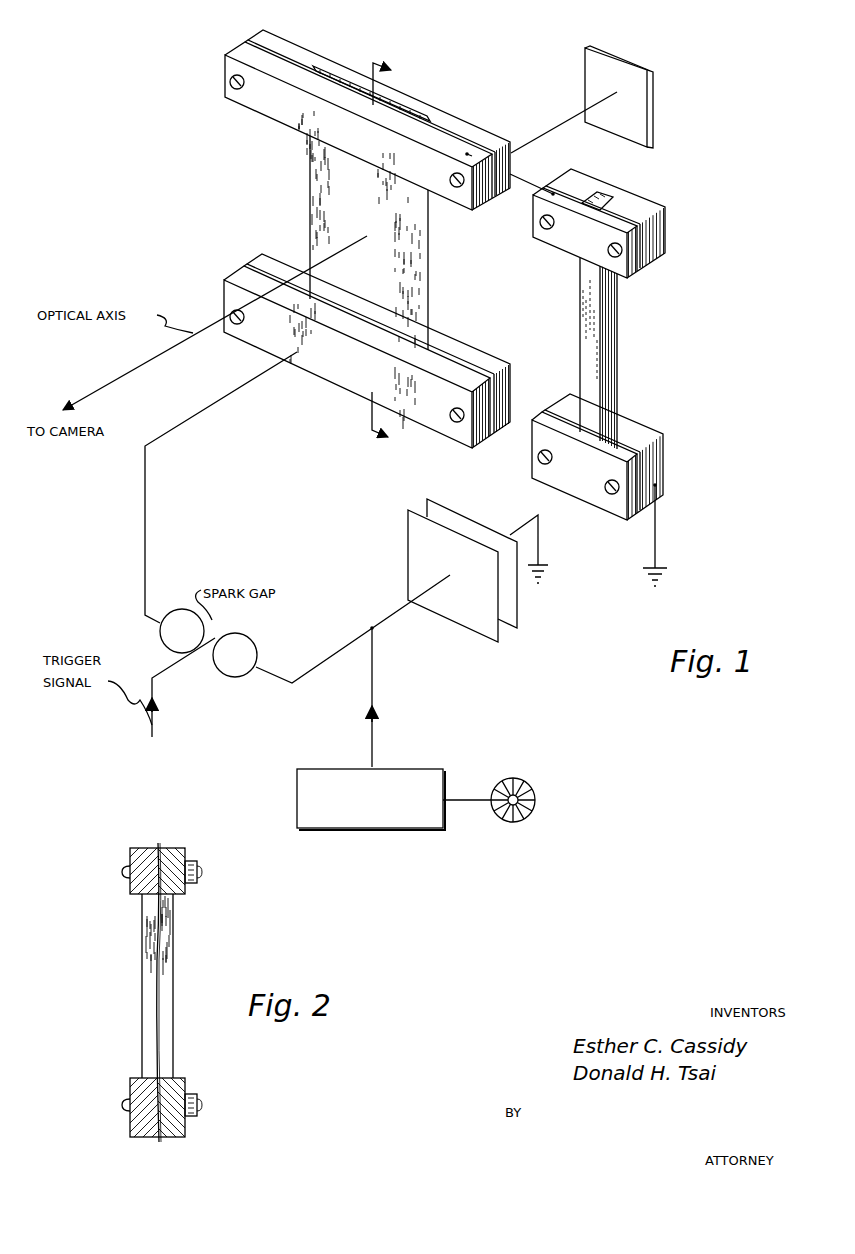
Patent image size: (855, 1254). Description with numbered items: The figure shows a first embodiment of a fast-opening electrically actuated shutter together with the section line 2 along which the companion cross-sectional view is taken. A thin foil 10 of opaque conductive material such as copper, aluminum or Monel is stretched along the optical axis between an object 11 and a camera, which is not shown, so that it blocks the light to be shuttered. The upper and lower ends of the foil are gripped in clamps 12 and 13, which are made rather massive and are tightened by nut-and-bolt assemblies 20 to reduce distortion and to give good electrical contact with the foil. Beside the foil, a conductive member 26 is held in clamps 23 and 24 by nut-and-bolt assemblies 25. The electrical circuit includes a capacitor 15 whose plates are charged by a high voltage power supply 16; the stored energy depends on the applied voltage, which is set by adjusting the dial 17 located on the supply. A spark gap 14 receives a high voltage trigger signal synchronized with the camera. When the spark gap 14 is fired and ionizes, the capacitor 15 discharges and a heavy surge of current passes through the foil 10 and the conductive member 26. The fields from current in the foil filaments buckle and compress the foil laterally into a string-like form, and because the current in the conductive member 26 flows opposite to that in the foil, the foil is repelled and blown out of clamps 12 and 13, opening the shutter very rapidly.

In FIG. 1, the section line 2— 2 is at (389, 257).
In FIG. 1, the foil 10 is at (316, 189).
In FIG. 2, the foil 10 is at (158, 968).
In FIG. 1, the object 11 is at (656, 124).
In FIG. 1, the clamp 12 is at (504, 126).
In FIG. 2, the clamp 12 is at (180, 825).
In FIG. 1, the clamp 13 is at (496, 344).
In FIG. 2, the clamp 13 is at (205, 1153).
In FIG. 1, the spark gap 14 is at (206, 681).
In FIG. 1, the capacitor 15 is at (525, 648).
In FIG. 1, the high voltage power supply 16 is at (368, 829).
In FIG. 1, the dial 17 is at (535, 803).
In FIG. 1, the nut-and-bolt assemblies 20 is at (225, 92).
In FIG. 2, the nut-and-bolt assemblies 20 is at (202, 872).
In FIG. 1, the clamp 23 is at (694, 201).
In FIG. 1, the clamp 24 is at (687, 423).
In FIG. 1, the nut-and-bolt assemblies 25 is at (607, 254).
In FIG. 1, the conductive member 26 is at (615, 350).
In FIG. 2, the conductive member 26 is at (142, 998).